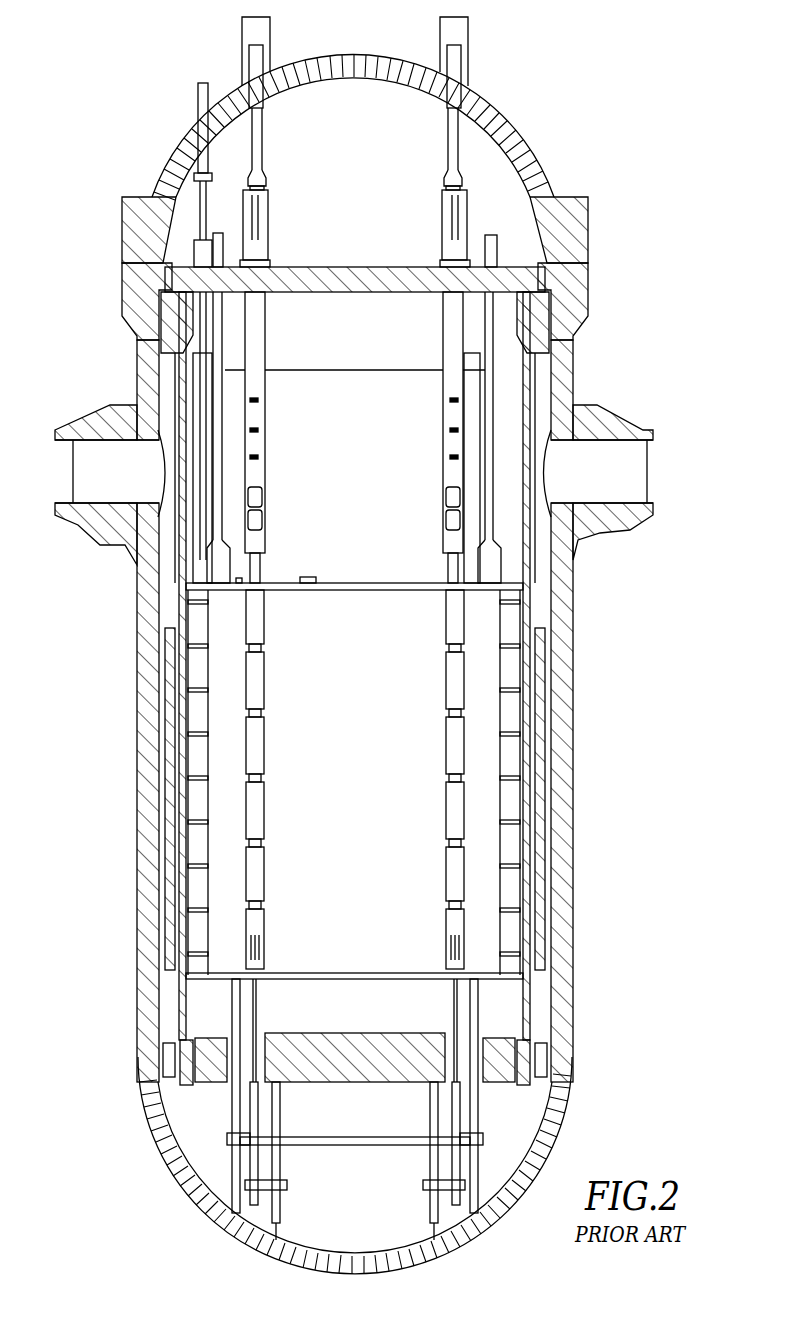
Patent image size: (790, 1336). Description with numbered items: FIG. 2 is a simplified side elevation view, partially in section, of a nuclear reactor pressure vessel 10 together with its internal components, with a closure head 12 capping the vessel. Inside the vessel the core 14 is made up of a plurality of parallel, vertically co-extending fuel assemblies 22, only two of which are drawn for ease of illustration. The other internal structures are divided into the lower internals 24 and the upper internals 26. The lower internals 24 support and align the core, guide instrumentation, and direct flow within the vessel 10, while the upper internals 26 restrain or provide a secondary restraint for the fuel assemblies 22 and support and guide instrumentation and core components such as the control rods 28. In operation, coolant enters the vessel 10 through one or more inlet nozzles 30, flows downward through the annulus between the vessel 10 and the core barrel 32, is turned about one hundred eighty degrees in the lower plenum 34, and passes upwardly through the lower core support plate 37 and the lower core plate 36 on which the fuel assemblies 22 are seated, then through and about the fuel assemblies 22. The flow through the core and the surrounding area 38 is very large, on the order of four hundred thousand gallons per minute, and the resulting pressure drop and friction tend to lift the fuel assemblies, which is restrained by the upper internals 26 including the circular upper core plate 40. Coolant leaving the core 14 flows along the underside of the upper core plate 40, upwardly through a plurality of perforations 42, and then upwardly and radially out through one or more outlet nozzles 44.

The pressure vessel 10 is at (577, 636).
The closure head 12 is at (580, 219).
The core 14 is at (366, 785).
The fuel assemblies 22 is at (266, 680).
The lower internals 24 is at (372, 1010).
The upper internals 26 is at (372, 465).
The control rods 28 is at (437, 588).
The inlet nozzles 30 is at (108, 406).
The core barrel 32 is at (179, 568).
The lower plenum 34 is at (520, 1120).
The lower core plate 36 is at (411, 969).
The lower core support plate 37 is at (381, 1086).
The surrounding area 38 is at (434, 680).
The upper core plate 40 is at (361, 592).
The perforations 42 is at (304, 578).
The outlet nozzles 44 is at (612, 412).